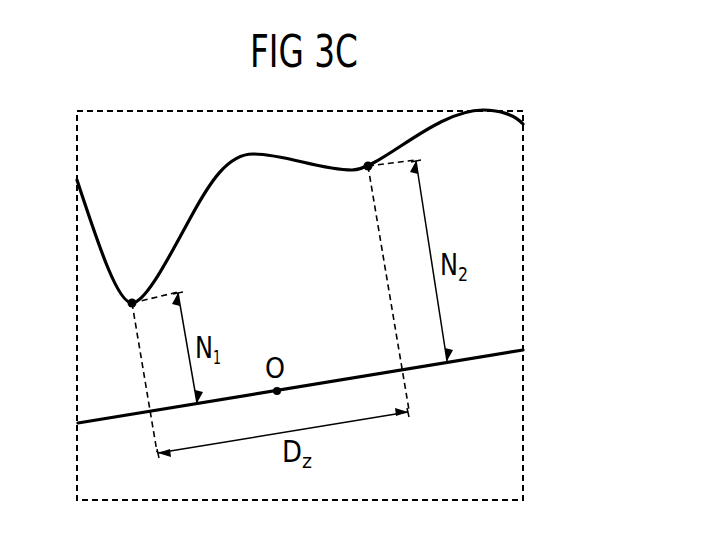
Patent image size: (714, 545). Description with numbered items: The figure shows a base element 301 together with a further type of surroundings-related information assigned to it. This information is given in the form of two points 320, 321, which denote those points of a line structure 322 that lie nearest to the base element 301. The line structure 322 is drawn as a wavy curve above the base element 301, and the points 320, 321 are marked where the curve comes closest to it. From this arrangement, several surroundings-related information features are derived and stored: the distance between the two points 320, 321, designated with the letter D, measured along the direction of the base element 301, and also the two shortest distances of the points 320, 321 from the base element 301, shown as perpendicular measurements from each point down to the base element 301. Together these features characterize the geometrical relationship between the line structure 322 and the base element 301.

The line structure 322 is at (193, 216).
The point 320 is at (131, 305).
The point 321 is at (367, 162).
The base element 301 is at (428, 369).